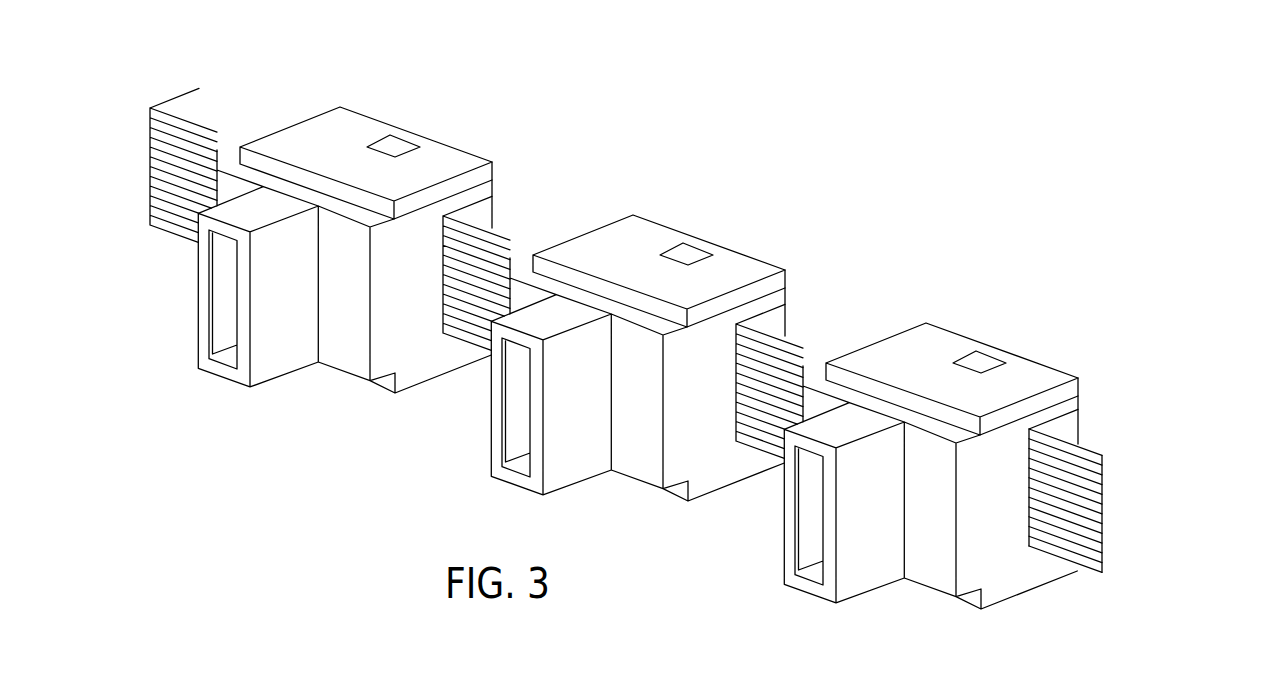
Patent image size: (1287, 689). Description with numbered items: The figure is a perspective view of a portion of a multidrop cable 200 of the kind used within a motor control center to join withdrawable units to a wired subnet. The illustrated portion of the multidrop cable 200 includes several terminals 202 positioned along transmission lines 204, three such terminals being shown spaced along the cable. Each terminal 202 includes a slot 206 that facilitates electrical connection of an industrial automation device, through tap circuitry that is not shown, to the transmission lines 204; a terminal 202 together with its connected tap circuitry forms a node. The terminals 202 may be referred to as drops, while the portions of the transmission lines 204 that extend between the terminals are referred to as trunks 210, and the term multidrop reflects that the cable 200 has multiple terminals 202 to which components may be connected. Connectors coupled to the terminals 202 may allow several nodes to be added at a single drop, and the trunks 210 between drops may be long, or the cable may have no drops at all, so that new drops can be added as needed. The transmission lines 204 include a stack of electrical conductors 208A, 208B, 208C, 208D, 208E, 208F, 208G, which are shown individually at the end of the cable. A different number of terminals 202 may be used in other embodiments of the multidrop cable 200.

The multidrop cable 200 is at (771, 120).
The terminal 202 is at (609, 355).
The transmission lines 204 is at (211, 128).
The slot 206 is at (220, 330).
The electrical conductor 208A is at (1143, 447).
The electrical conductor 208B is at (1106, 477).
The electrical conductor 208C is at (1106, 497).
The electrical conductor 208D is at (1106, 512).
The electrical conductor 208E is at (1106, 525).
The electrical conductor 208F is at (1106, 543).
The electrical conductor 208G is at (1105, 566).
The trunk 210 is at (706, 324).